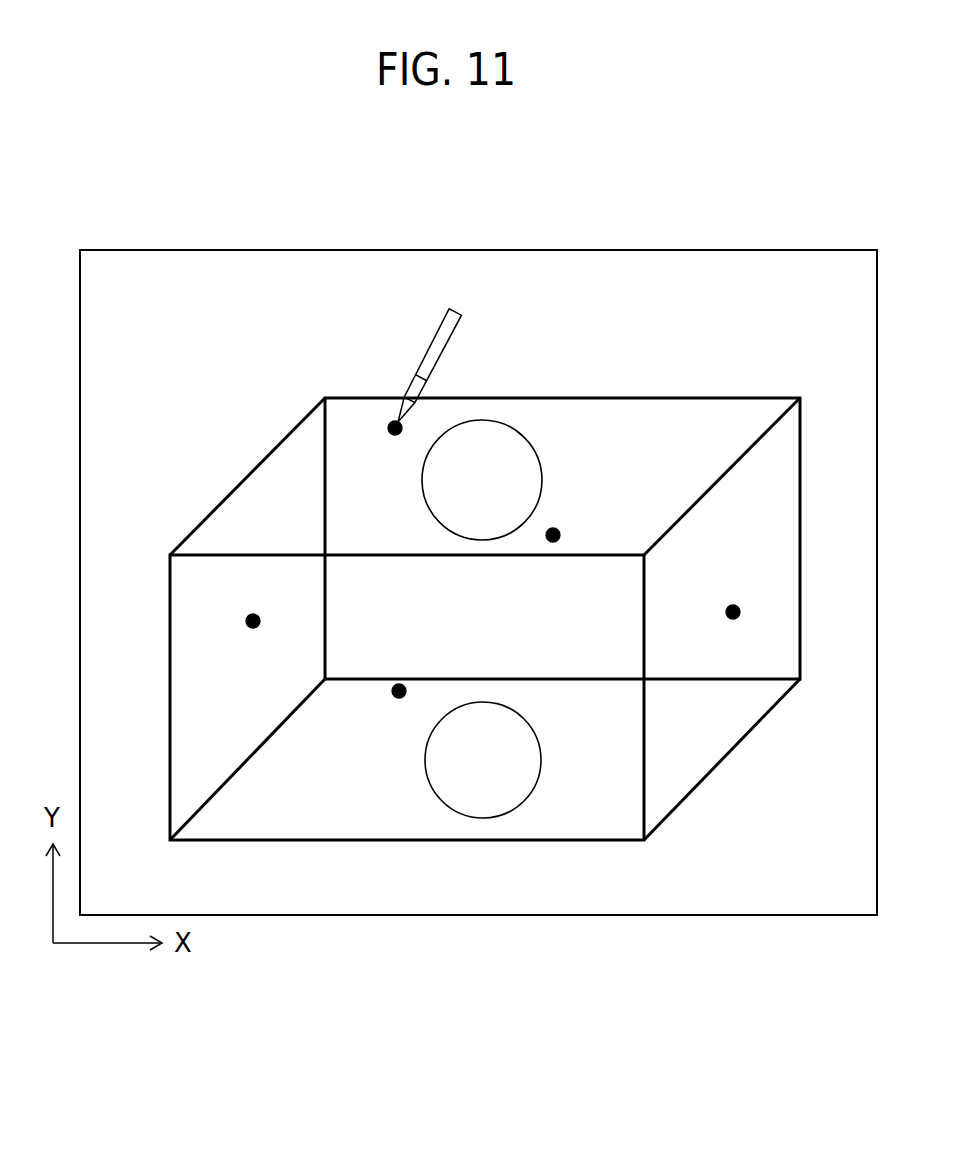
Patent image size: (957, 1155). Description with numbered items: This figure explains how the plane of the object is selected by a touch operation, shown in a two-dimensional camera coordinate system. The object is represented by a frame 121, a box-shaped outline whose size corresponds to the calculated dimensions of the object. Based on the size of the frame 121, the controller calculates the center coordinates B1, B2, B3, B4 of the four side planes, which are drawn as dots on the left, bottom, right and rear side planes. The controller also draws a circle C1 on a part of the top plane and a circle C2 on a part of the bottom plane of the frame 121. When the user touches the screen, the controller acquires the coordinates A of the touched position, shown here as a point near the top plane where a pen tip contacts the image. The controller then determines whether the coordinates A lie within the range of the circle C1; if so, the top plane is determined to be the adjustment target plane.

The frame 121 is at (246, 479).
The coordinates of touched position A is at (393, 420).
The center coordinates of side plane B1 is at (245, 620).
The center coordinates of side plane B2 is at (399, 700).
The center coordinates of side plane B3 is at (742, 612).
The center coordinates of side plane B4 is at (556, 528).
The circle on top plane C1 is at (492, 422).
The circle on bottom plane C2 is at (520, 800).